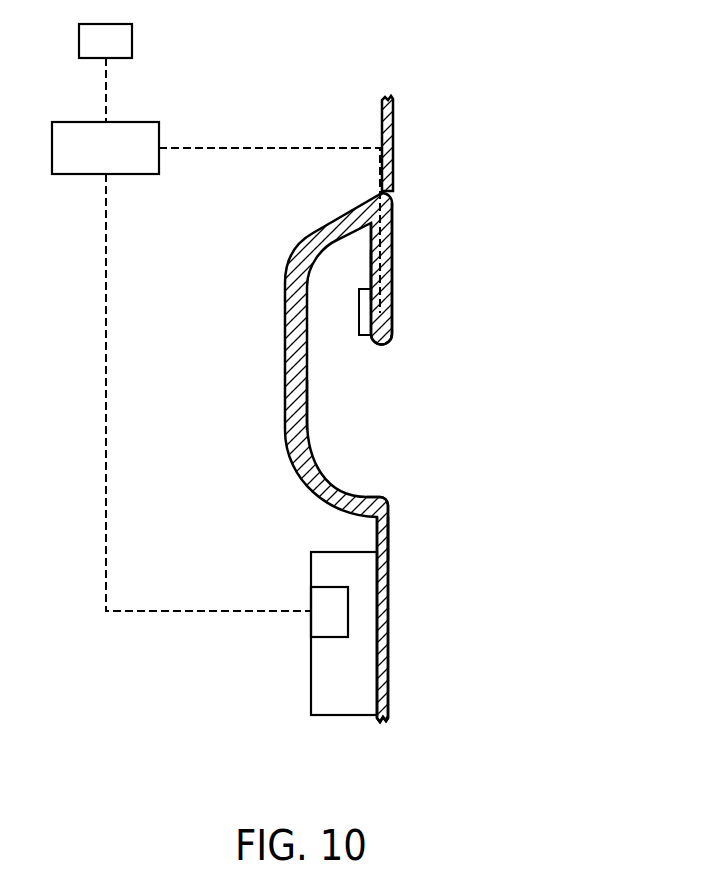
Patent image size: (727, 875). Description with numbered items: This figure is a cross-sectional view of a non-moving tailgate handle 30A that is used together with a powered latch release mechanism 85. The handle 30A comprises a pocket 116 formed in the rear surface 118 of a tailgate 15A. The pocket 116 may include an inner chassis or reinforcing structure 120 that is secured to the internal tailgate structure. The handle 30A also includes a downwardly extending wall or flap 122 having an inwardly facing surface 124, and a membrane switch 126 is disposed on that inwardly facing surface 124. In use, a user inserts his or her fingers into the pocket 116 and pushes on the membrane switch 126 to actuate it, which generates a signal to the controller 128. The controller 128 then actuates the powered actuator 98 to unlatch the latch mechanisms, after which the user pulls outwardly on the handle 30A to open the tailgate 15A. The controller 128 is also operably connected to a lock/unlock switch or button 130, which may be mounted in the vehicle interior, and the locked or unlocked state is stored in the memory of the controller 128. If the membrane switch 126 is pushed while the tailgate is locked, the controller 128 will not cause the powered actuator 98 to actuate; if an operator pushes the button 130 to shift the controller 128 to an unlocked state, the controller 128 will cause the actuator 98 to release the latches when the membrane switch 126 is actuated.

The lock/unlock switch 130 is at (132, 37).
The controller 128 is at (126, 162).
The tailgate handle 30A is at (430, 357).
The inner chassis or reinforcing structure 120 is at (285, 320).
The tailgate 15A is at (392, 628).
The flap 122 is at (393, 320).
The inwardly facing surface 124 is at (370, 273).
The membrane switch 126 is at (370, 318).
The pocket 116 is at (336, 409).
The rear surface 118 is at (392, 540).
The powered latch release mechanism 85 is at (308, 664).
The powered actuator 98 is at (330, 592).